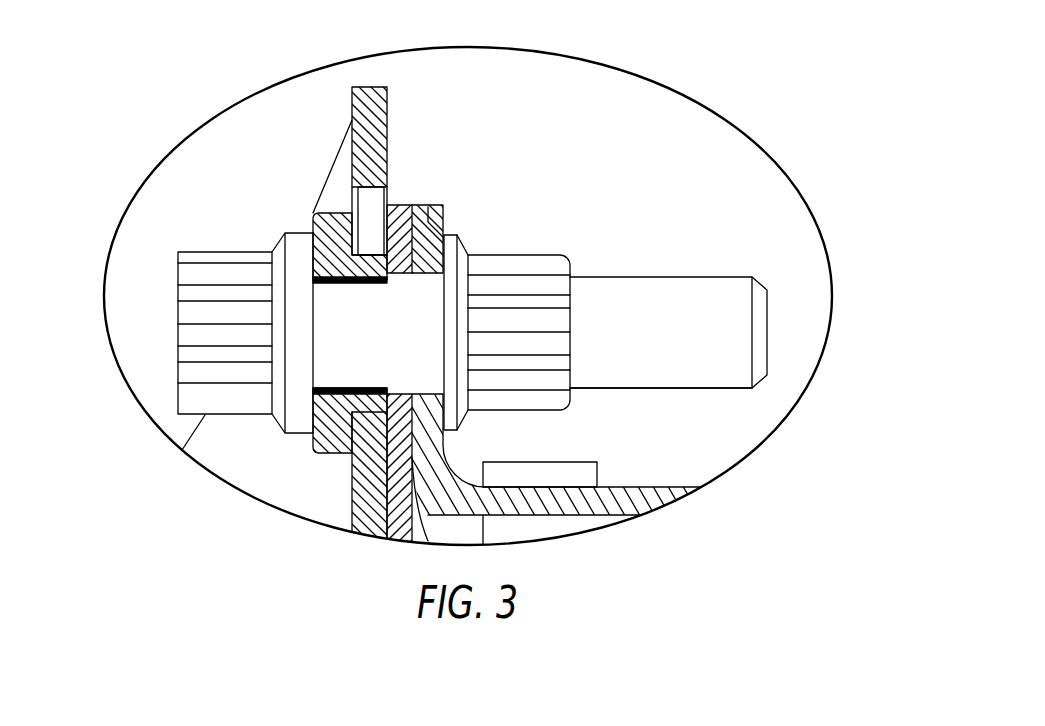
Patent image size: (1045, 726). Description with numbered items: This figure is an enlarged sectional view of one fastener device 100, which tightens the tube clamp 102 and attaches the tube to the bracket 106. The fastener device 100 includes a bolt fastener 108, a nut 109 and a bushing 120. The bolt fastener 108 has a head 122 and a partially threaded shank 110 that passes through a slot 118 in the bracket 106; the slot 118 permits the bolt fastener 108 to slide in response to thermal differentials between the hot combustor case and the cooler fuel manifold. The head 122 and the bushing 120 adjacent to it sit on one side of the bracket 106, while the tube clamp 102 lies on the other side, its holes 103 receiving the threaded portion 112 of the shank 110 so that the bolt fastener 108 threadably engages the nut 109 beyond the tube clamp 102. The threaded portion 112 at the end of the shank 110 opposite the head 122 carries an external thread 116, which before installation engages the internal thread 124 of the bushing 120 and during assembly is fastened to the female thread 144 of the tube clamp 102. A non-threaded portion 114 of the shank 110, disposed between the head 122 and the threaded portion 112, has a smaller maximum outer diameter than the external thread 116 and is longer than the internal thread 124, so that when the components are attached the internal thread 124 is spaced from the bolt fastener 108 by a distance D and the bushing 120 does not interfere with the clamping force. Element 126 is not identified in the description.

The fastener device 100 is at (175, 90).
The tube clamp 102 is at (673, 470).
The holes 103 is at (397, 390).
The bracket 106 is at (351, 507).
The bolt fastener 108 is at (178, 274).
The nut 109 is at (572, 258).
The shank 110 is at (745, 277).
The threaded portion 112 is at (760, 285).
The non-threaded portion 114 is at (349, 213).
The external thread 116 is at (713, 390).
The slot 118 is at (385, 198).
The bushing 120 is at (313, 217).
The head 122 is at (178, 320).
The internal thread 124 is at (341, 390).
The flange face 126 is at (310, 292).
The female thread 144 is at (452, 290).
The distance D is at (328, 274).